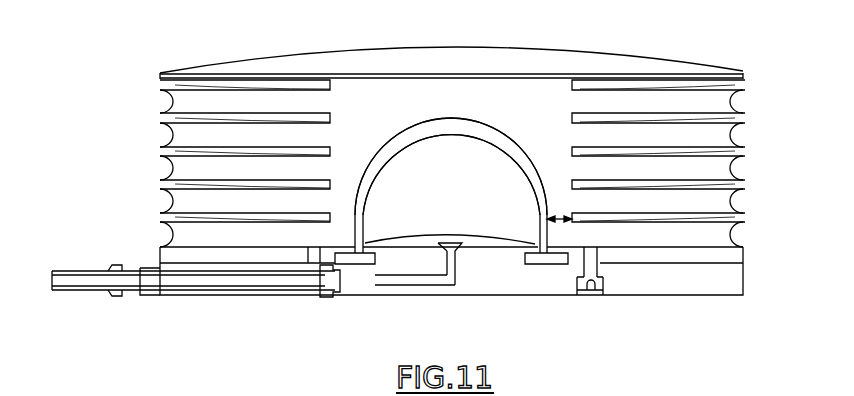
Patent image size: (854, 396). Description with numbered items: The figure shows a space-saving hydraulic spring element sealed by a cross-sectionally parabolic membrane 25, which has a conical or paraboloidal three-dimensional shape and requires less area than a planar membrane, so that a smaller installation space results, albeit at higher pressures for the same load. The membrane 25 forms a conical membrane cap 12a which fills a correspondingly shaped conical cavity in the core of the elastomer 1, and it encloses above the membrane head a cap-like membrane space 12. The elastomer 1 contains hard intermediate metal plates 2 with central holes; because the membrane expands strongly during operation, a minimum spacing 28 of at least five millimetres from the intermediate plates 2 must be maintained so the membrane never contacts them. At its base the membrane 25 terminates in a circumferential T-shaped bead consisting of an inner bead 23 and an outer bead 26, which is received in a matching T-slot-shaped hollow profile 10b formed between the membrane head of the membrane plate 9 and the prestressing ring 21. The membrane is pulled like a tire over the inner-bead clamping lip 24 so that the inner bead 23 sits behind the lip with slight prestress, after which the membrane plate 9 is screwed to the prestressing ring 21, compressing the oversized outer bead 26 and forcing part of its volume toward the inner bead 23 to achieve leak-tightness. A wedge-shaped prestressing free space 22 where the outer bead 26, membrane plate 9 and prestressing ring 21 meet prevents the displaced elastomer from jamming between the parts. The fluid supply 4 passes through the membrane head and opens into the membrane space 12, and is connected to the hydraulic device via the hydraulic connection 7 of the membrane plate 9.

The elastomer 1 is at (553, 92).
The intermediate metal plates 2 is at (660, 84).
The fluid supply 4 is at (380, 280).
The hydraulic connection 7 is at (155, 291).
The membrane plate 9 is at (425, 263).
The T-slot-shaped hollow profile 10b is at (362, 265).
The membrane space 12 is at (421, 180).
The conical membrane cap 12a is at (444, 124).
The prestressing ring 21 is at (741, 254).
The prestressing free space 22 is at (573, 265).
The inner bead 23 is at (545, 259).
The inner-bead clamping lip 24 is at (522, 253).
The parabolic membrane 25 is at (478, 128).
The outer bead 26 is at (343, 264).
The spacing from membrane metal plate 28 is at (560, 214).